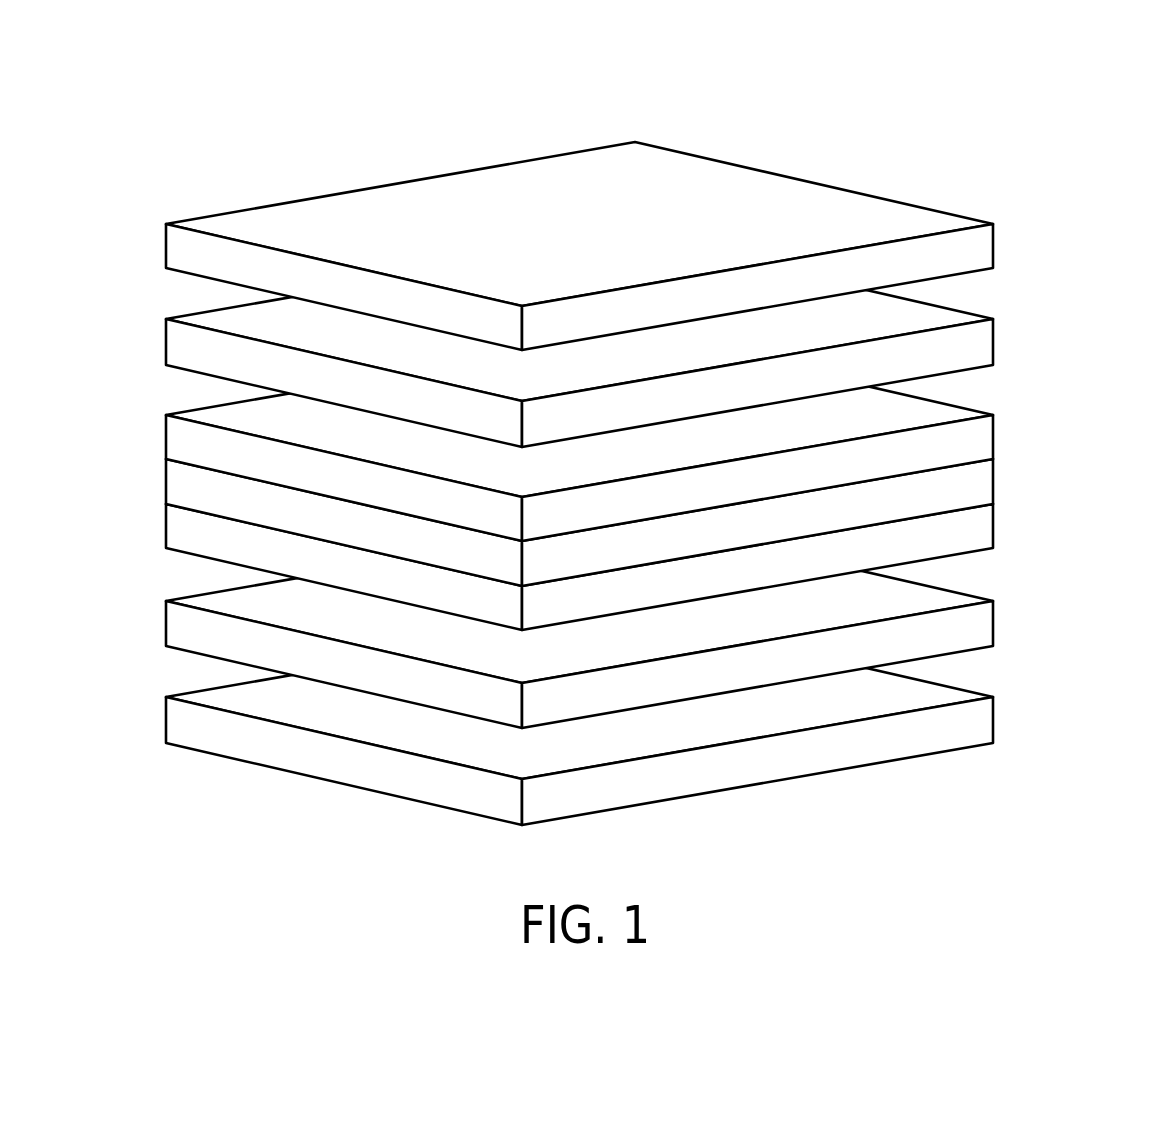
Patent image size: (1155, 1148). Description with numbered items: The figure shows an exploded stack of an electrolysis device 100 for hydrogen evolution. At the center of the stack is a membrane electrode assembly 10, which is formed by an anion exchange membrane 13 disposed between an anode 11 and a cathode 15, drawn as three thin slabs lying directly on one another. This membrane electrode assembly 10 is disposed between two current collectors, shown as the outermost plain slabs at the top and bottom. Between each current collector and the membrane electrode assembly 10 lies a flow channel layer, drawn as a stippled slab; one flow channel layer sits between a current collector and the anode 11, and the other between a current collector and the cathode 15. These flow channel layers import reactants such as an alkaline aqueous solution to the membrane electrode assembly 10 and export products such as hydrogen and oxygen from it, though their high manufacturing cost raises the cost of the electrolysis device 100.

The electrolysis device 100 is at (162, 87).
The membrane electrode assembly 10 is at (649, 481).
The anode 11 is at (1073, 549).
The anion exchange membrane 13 is at (973, 485).
The cathode 15 is at (973, 530).